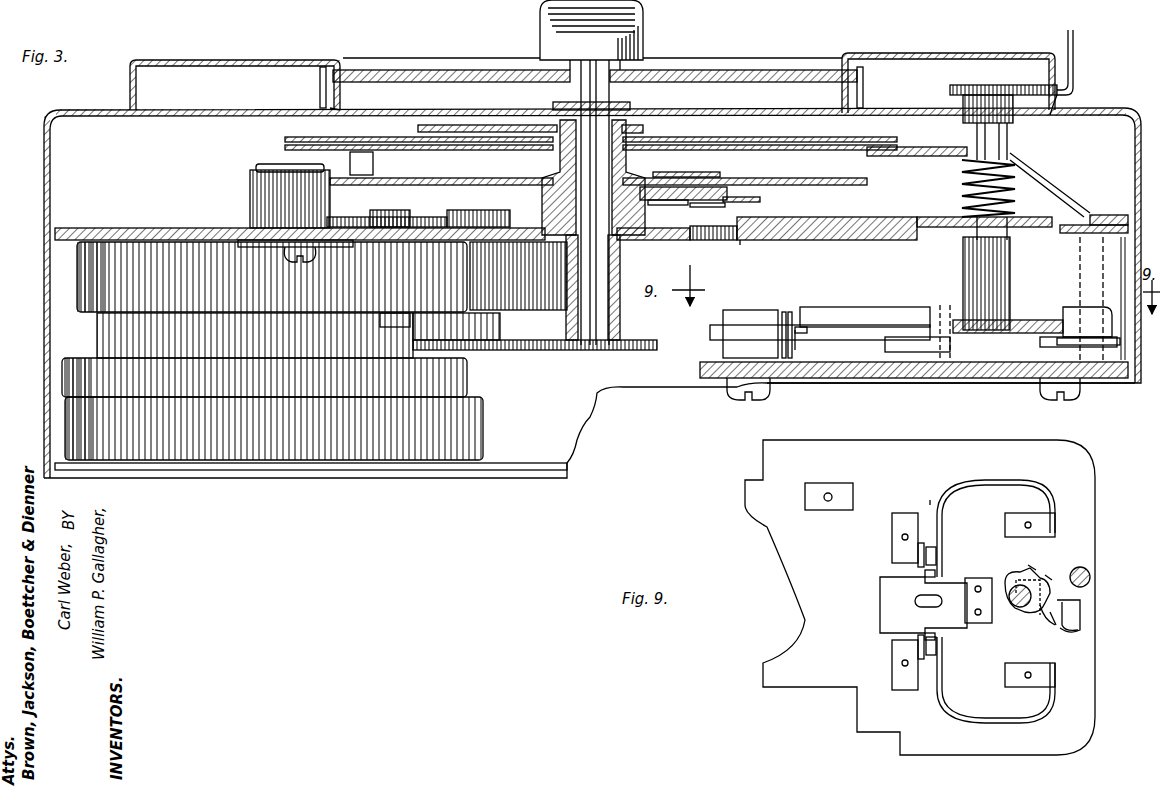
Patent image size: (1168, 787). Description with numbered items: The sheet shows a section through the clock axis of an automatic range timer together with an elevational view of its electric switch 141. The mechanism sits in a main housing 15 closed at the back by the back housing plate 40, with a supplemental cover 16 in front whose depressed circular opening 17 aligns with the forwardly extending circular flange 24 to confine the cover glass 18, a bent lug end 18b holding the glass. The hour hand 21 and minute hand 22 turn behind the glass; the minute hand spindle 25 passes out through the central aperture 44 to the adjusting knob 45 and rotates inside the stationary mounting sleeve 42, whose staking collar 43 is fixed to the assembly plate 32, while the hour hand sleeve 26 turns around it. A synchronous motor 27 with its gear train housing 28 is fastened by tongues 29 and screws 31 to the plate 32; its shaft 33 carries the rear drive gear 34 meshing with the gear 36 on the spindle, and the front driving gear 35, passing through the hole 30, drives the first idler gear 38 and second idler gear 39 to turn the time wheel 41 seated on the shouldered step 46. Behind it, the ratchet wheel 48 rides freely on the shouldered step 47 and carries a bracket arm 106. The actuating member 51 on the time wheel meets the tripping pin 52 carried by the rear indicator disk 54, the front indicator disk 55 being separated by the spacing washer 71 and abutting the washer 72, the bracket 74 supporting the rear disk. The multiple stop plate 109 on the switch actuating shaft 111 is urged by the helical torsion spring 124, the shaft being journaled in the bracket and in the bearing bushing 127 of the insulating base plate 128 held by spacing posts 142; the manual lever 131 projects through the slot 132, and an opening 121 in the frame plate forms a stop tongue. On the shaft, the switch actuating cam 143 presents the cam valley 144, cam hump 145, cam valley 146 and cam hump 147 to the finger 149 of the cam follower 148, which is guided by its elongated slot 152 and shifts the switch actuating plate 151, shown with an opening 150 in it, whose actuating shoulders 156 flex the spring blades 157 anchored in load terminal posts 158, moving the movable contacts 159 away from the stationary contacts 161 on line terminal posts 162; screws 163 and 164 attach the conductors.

In FIG. 3, the main housing 15 is at (86, 116).
In FIG. 3, the supplemental cover 16 is at (240, 61).
In FIG. 3, the depressed circular opening 17 is at (346, 70).
In FIG. 3, the cover glass 18 is at (424, 76).
In FIG. 3, the bent lug end 18b is at (318, 68).
In FIG. 3, the hour hand 21 is at (450, 127).
In FIG. 3, the minute hand 22 is at (632, 107).
In FIG. 3, the forwardly extending circular flange 24 is at (342, 104).
In FIG. 3, the minute hand spindle 25 is at (604, 270).
In FIG. 3, the hour hand sleeve 26 is at (562, 159).
In FIG. 3, the synchronous alternating current motor 27 is at (262, 430).
In FIG. 3, the gear train housing 28 is at (295, 292).
In FIG. 3, the tongues 29 is at (264, 266).
In FIG. 3, the hole 30 is at (442, 247).
In FIG. 3, the fastening screws 31 is at (310, 262).
In FIG. 3, the assembly plate 32 is at (148, 228).
In FIG. 3, the shaft 33 is at (395, 322).
In FIG. 3, the rear drive gear 34 is at (412, 344).
In FIG. 3, the front driving gear 35 is at (470, 246).
In FIG. 3, the gear 36 is at (555, 352).
In FIG. 3, the first idler gear 38 is at (370, 247).
In FIG. 3, the second idler gear 39 is at (236, 247).
In FIG. 3, the back housing plate 40 is at (345, 471).
In FIG. 3, the time wheel 41 is at (380, 180).
In FIG. 3, the mounting sleeve 42 is at (575, 262).
In FIG. 3, the staking collar 43 is at (553, 287).
In FIG. 3, the central aperture 44 is at (616, 66).
In FIG. 3, the adjusting knob 45 is at (555, 15).
In FIG. 3, the shouldered step 46 is at (660, 174).
In FIG. 3, the shouldered step 47 is at (660, 200).
In FIG. 3, the ratchet wheel 48 is at (760, 192).
In FIG. 3, the actuating member 51 is at (718, 178).
In FIG. 3, the tripping pin 52 is at (352, 160).
In FIG. 3, the rear indicator disk 54 is at (285, 147).
In FIG. 3, the front indicator disk 55 is at (285, 139).
In FIG. 3, the spacing washer 71 is at (655, 148).
In FIG. 3, the washer 72 is at (645, 130).
In FIG. 3, the bracket 74 is at (1040, 176).
In FIG. 3, the bracket arm 106 is at (703, 202).
In FIG. 3, the multiple stop plate 109 is at (868, 220).
In FIG. 3, the switch actuating shaft 111 is at (975, 135).
In FIG. 9, the switch actuating shaft 111 is at (1012, 608).
In FIG. 3, the opening 121 is at (742, 240).
In FIG. 3, the helical torsion spring 124 is at (965, 190).
In FIG. 3, the bearing bushing 127 is at (957, 380).
In FIG. 3, the insulating base plate 128 is at (870, 378).
In FIG. 9, the insulating base plate 128 is at (805, 672).
In FIG. 3, the manually actuated lever 131 is at (1076, 32).
In FIG. 3, the slot 132 is at (1057, 100).
In FIG. 3, the electrical switch 141 is at (852, 292).
In FIG. 9, the electrical switch 141 is at (930, 498).
In FIG. 3, the spacing posts 142 is at (1120, 380).
In FIG. 9, the spacing posts 142 is at (1092, 576).
In FIG. 3, the switch actuating cam 143 is at (1015, 322).
In FIG. 9, the switch actuating cam 143 is at (1018, 575).
In FIG. 9, the cam valley 144 is at (1056, 625).
In FIG. 9, the cam hump 145 is at (1062, 594).
In FIG. 9, the cam valley 146 is at (1050, 575).
In FIG. 9, the cam hump 147 is at (1030, 570).
In FIG. 3, the cam follower 148 is at (915, 345).
In FIG. 9, the cam follower 148 is at (1040, 625).
In FIG. 3, the finger 149 is at (1086, 320).
In FIG. 9, the finger 149 is at (1080, 618).
In FIG. 9, the slot 150 is at (913, 600).
In FIG. 3, the switch actuating plate 151 is at (893, 328).
In FIG. 9, the switch actuating plate 151 is at (890, 610).
In FIG. 3, the elongated slot 152 is at (946, 312).
In FIG. 9, the elongated slot 152 is at (1010, 615).
In FIG. 3, the actuating shoulders 156 is at (808, 328).
In FIG. 9, the actuating shoulders 156 is at (890, 580).
In FIG. 3, the spring blade 157 is at (868, 308).
In FIG. 9, the spring blade 157 is at (993, 599).
In FIG. 3, the load terminal post 158 is at (1030, 338).
In FIG. 9, the load terminal post 158 is at (1022, 518).
In FIG. 3, the movable contact 159 is at (789, 312).
In FIG. 9, the movable contact 159 is at (938, 552).
In FIG. 3, the stationary contact 161 is at (784, 311).
In FIG. 9, the stationary contact 161 is at (918, 548).
In FIG. 3, the line terminal post 162 is at (740, 311).
In FIG. 9, the line terminal post 162 is at (892, 540).
In FIG. 3, the screws 163 is at (1068, 400).
In FIG. 3, the screws 164 is at (745, 400).